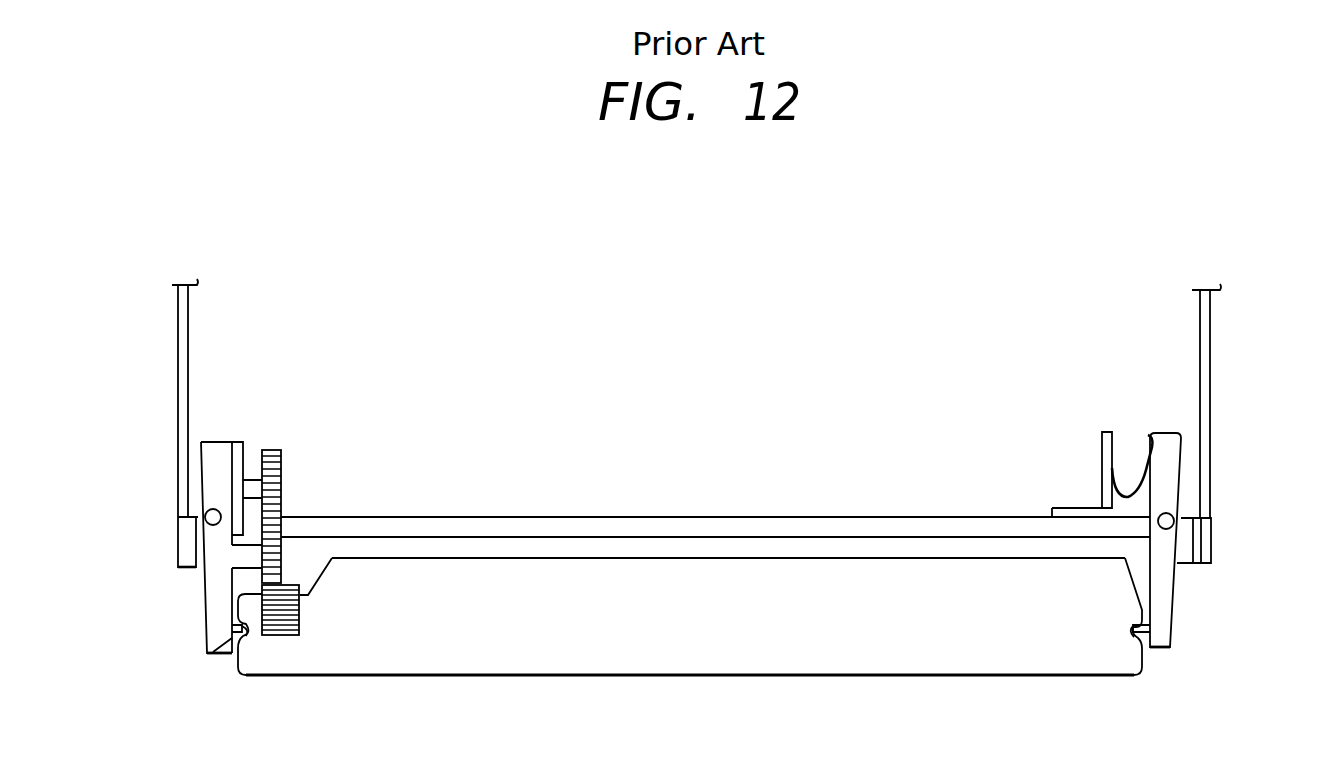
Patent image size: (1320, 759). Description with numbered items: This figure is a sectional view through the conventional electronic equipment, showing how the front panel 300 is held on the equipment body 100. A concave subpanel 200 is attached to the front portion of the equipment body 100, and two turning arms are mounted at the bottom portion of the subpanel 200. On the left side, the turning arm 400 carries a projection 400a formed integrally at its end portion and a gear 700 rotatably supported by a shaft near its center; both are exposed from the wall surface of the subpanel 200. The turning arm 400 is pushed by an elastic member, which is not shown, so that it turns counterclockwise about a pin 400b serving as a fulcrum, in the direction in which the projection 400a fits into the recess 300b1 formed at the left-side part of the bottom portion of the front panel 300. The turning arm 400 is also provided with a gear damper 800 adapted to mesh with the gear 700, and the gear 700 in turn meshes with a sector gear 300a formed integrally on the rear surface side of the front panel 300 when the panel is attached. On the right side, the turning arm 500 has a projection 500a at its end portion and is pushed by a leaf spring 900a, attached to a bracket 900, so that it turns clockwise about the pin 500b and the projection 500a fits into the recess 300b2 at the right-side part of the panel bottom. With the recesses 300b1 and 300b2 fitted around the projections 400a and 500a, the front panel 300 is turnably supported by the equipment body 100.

The equipment body 100 is at (178, 430).
The subpanel 200 is at (178, 536).
The front panel 300 is at (822, 658).
The sector gear 300a is at (300, 604).
The recess 300b1 is at (244, 634).
The recess 300b2 is at (1136, 629).
The turning arm 400 is at (203, 607).
The projection 400a is at (207, 652).
The pin 400b is at (222, 517).
The turning arm 500 is at (1173, 588).
The projection 500a is at (1158, 650).
The pin 500b is at (1180, 517).
The gear 700 is at (284, 557).
The gear damper 800 is at (242, 442).
The bracket 900 is at (1058, 507).
The leaf spring 900a is at (1150, 443).